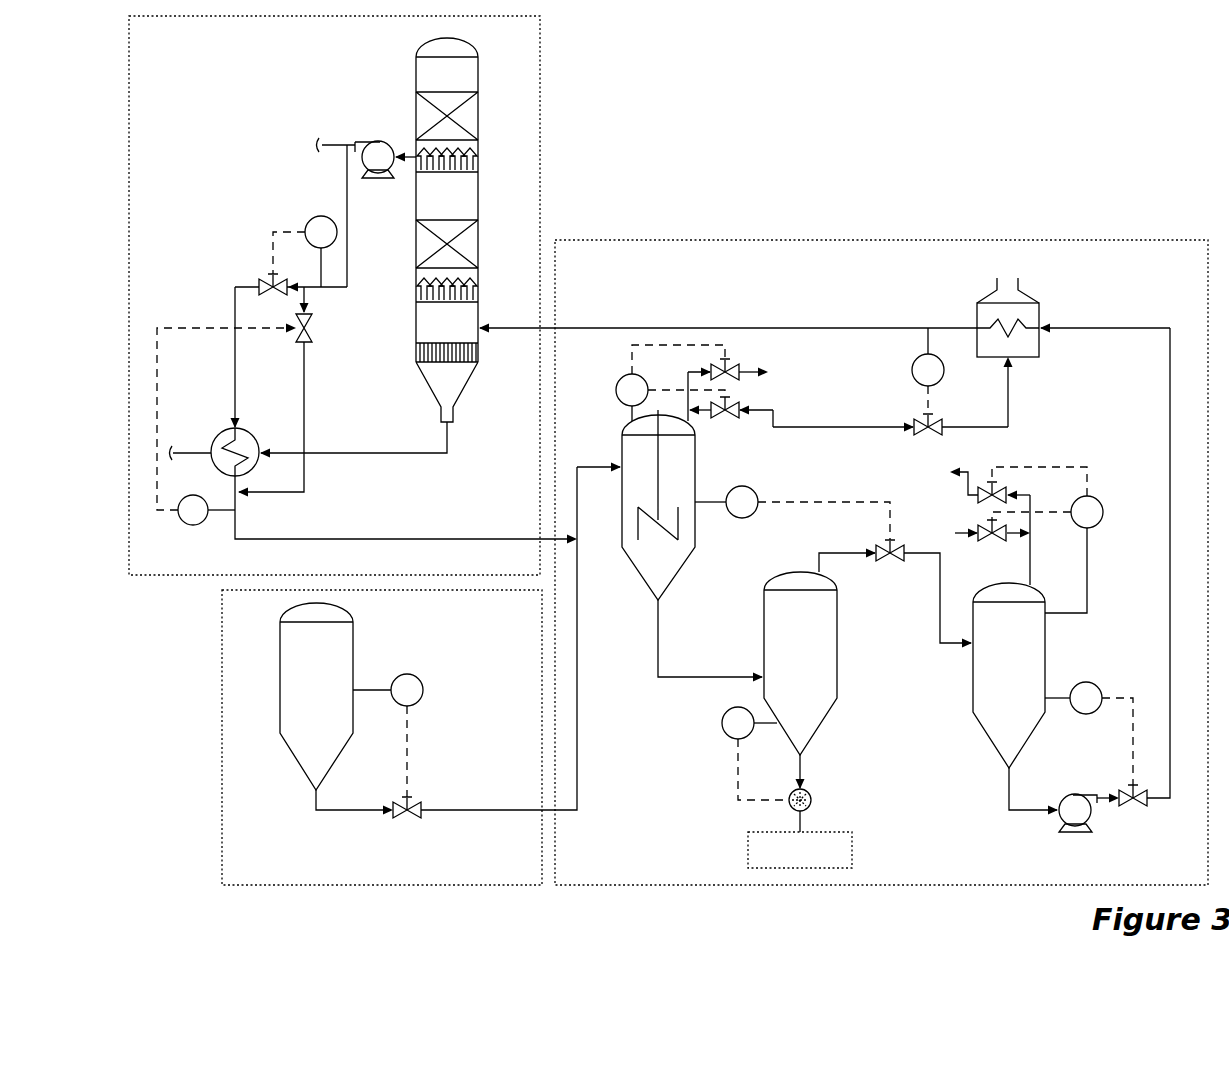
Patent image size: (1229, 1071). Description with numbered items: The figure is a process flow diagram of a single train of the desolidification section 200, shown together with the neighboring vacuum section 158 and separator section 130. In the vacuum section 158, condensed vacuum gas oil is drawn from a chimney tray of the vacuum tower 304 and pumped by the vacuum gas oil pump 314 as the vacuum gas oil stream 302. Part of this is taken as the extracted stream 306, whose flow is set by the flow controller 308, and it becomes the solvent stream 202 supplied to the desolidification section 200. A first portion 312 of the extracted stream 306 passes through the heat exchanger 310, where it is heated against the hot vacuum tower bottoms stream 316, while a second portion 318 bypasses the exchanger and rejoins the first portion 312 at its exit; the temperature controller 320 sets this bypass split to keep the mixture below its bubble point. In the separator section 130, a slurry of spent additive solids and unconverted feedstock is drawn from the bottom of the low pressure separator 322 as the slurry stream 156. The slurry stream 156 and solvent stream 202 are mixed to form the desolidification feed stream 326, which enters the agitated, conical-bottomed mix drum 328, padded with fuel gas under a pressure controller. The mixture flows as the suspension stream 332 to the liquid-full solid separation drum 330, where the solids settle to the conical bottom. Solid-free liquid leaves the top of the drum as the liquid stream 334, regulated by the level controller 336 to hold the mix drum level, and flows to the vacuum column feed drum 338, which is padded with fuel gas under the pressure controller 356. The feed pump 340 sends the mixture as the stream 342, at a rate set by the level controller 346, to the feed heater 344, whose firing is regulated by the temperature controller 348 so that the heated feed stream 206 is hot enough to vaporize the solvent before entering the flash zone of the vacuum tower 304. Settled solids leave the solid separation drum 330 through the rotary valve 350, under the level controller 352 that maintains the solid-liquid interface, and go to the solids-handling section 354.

The separator section 130 is at (222, 773).
The slurry stream 156 is at (468, 809).
The vacuum section 158 is at (182, 576).
The desolidification section 200 is at (988, 239).
The solvent stream 202 is at (415, 539).
The heated feed stream 206 is at (585, 328).
The vacuum gas oil stream 302 is at (350, 140).
The vacuum tower 304 is at (480, 70).
The extracted stream 306 is at (347, 292).
The flow controller 308 is at (318, 217).
The heat exchanger 310 is at (226, 428).
The first portion 312 is at (233, 306).
The vacuum gas oil pump 314 is at (377, 140).
The vacuum tower bottoms stream 316 is at (350, 455).
The second portion 318 is at (305, 415).
The temperature controller 320 is at (192, 526).
The low pressure separator 322 is at (279, 635).
The desolidification feed stream 326 is at (610, 465).
The mix drum 328 is at (697, 462).
The solid separation drum 330 is at (616, 392).
The suspension stream 332 is at (685, 677).
The liquid stream 334 is at (940, 628).
The level controller 336 is at (745, 485).
The vacuum column feed drum 338 is at (1000, 583).
The feed pump 340 is at (1092, 815).
The stream 342 is at (1168, 616).
The feed heater 344 is at (1030, 300).
The level controller 346 is at (1086, 682).
The temperature controller 348 is at (913, 368).
The rotary valve 350 is at (813, 800).
The level controller 352 is at (722, 723).
The solids-handling section 354 is at (852, 850).
The pressure controller 356 is at (1104, 510).